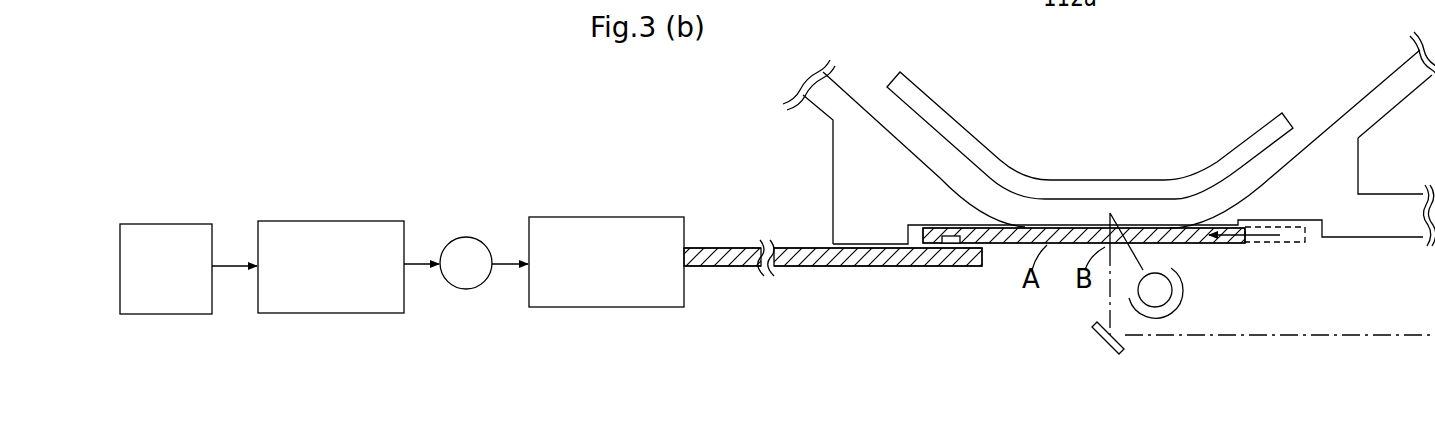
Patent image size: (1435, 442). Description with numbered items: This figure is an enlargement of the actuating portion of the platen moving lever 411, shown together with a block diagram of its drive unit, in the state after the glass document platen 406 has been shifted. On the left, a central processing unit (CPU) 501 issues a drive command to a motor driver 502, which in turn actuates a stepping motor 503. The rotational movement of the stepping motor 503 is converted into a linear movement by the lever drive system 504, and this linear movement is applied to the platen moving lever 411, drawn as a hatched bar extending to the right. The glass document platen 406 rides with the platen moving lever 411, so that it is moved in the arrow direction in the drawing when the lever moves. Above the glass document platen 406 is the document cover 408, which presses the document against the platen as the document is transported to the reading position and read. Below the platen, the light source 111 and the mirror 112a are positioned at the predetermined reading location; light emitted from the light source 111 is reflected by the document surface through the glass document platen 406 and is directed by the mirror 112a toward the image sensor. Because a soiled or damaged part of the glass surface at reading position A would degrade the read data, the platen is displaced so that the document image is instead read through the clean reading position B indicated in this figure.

The central processing unit (CPU) 501 is at (164, 224).
The motor driver 502 is at (332, 221).
The stepping motor 503 is at (462, 237).
The lever drive system 504 is at (604, 217).
The platen moving lever 411 is at (820, 267).
The glass document platen 406 is at (1008, 243).
The document cover 408 is at (1103, 185).
The light source 111 is at (1183, 293).
The mirror 112a is at (1092, 336).